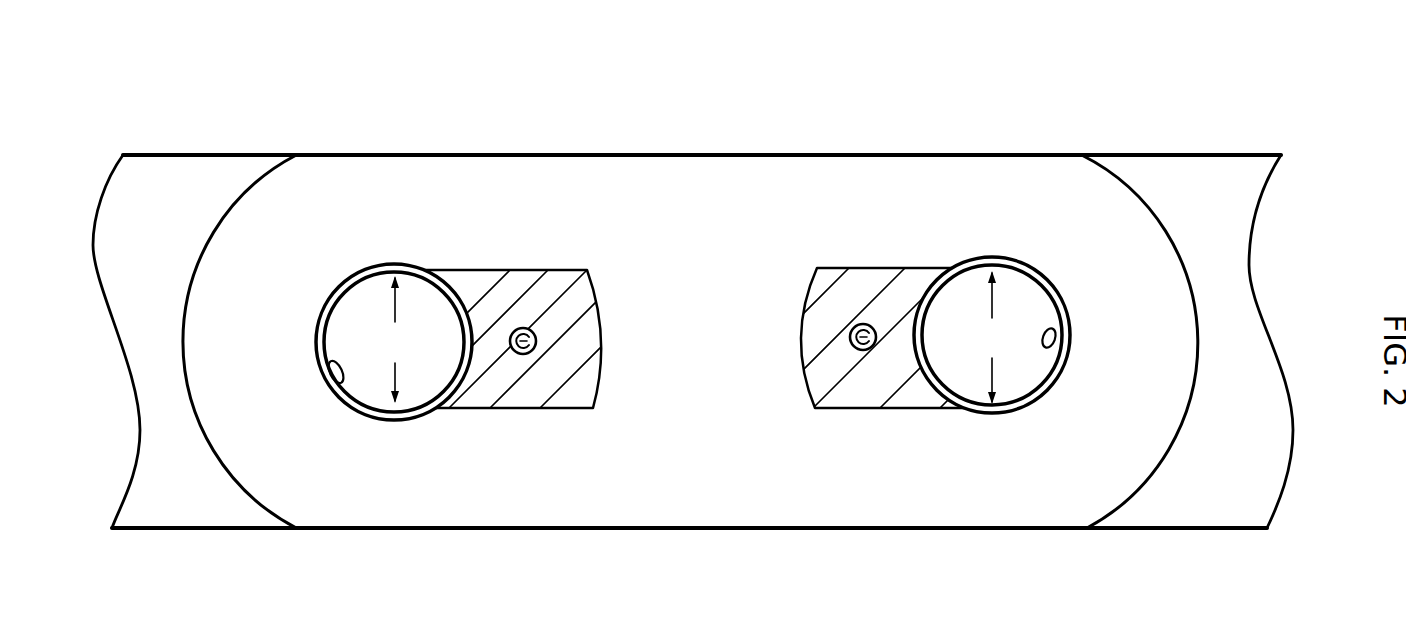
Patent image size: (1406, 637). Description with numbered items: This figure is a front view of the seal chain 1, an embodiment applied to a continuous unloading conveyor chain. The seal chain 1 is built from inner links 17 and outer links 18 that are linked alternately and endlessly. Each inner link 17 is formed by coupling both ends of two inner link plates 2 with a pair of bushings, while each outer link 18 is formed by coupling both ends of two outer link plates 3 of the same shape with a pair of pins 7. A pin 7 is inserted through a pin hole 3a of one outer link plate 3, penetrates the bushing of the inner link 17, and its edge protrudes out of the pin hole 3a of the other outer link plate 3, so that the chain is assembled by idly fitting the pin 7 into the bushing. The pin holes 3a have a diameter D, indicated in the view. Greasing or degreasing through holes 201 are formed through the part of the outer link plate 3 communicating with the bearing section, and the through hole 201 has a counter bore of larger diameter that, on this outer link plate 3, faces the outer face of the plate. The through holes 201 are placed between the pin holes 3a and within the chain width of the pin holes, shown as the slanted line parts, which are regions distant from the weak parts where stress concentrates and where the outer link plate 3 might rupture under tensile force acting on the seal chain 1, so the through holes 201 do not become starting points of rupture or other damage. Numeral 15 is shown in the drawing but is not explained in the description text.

The seal chain 1 is at (383, 98).
The inner link plate 2 is at (168, 173).
The outer link plate 3 is at (740, 167).
The pin hole 3a is at (342, 393).
The pin 7 is at (360, 303).
The right end portion 15 is at (1233, 133).
The inner link 17 is at (239, 141).
The outer link 18 is at (900, 137).
The greasing or degreasing through hole 201 is at (536, 343).